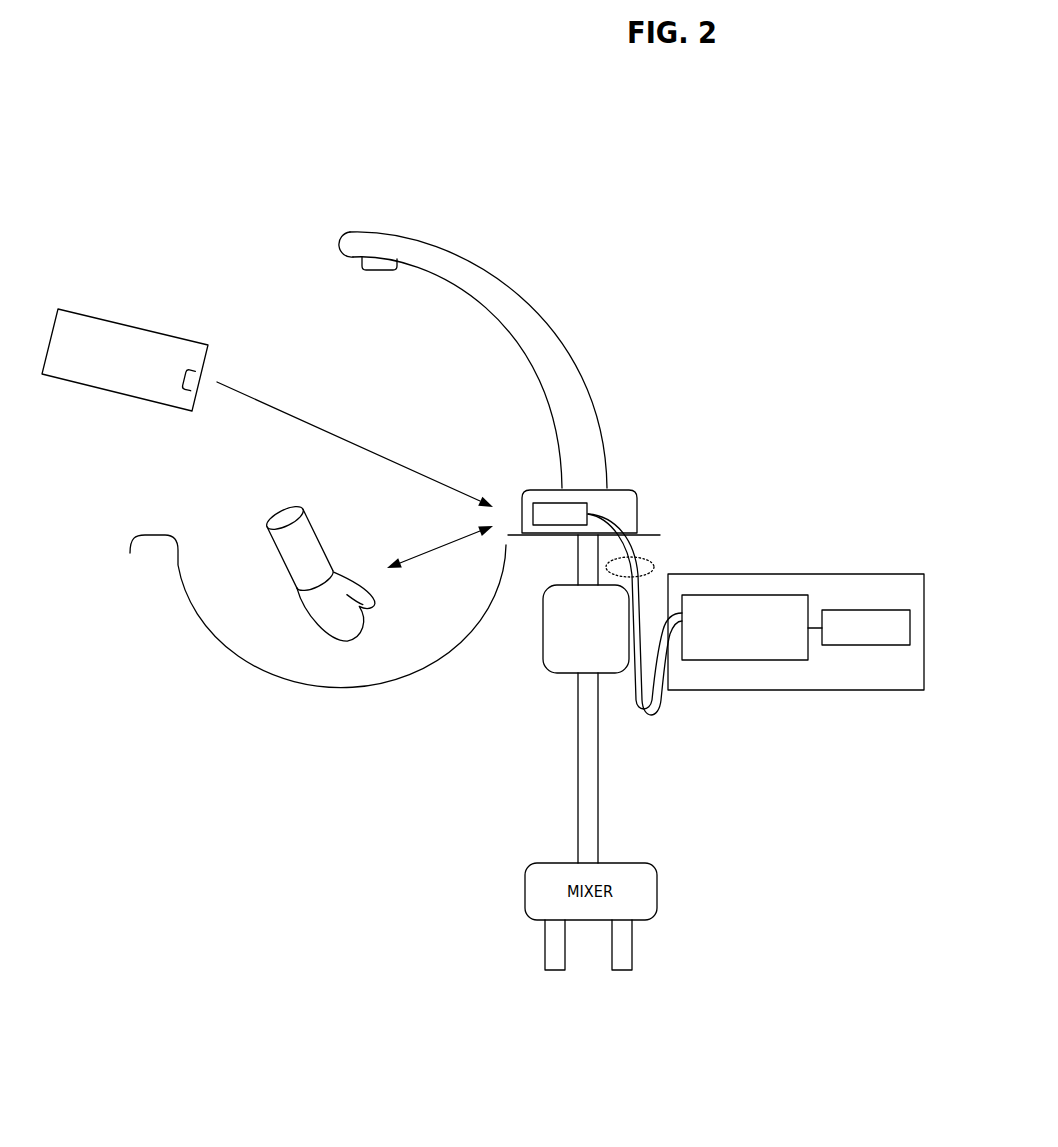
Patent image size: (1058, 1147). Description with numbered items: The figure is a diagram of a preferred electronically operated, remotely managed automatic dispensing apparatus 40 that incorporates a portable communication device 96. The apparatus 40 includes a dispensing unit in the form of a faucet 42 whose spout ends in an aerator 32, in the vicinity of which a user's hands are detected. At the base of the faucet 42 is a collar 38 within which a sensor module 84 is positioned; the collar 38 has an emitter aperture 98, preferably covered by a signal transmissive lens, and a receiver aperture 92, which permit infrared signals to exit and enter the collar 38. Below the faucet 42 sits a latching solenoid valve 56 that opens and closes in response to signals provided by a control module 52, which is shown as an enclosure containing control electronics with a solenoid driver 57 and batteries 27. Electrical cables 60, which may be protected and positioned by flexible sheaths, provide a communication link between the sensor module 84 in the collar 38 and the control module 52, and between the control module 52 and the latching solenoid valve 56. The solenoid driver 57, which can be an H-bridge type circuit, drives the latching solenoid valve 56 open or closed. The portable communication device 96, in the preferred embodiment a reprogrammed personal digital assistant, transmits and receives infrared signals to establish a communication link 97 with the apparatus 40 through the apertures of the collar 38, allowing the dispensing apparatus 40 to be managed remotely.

The remotely managed automatic dispensing apparatus 40 is at (671, 282).
The faucet 42 is at (537, 300).
The aerator 32 is at (375, 272).
The collar 38 is at (640, 489).
The sensor module 84 is at (550, 503).
The receiver aperture 92 is at (502, 484).
The emitter aperture 98 is at (518, 510).
The portable communication device 96 is at (170, 336).
The communication link 97 is at (327, 410).
The latching solenoid valve 56 is at (555, 673).
The electrical cables 60 is at (653, 567).
The control module 52 is at (717, 690).
The solenoid driver 57 is at (745, 595).
The batteries 27 is at (845, 610).